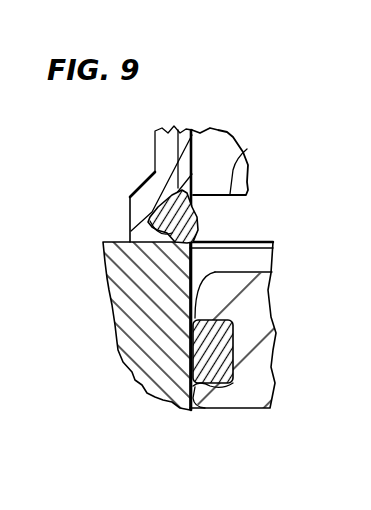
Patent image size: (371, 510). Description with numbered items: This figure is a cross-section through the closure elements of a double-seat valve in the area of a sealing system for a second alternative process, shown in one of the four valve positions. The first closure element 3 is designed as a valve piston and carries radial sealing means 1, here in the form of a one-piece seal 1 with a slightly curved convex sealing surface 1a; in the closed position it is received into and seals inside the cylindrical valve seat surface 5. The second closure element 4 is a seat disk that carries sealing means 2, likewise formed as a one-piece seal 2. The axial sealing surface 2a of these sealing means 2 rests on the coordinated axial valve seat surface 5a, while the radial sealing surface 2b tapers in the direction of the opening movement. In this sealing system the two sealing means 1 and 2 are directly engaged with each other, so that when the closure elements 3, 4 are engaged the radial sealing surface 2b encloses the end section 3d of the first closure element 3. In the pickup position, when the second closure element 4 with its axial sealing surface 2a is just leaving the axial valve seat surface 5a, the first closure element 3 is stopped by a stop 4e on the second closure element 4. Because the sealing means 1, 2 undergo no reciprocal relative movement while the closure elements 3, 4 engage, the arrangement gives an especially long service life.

The radial sealing means 1 is at (216, 358).
The sealing surface 1a is at (233, 380).
The sealing means 2 is at (181, 129).
The axial sealing surface 2a is at (189, 243).
The radial sealing surface 2b is at (198, 229).
The first closure element 3 is at (253, 331).
The end section 3d is at (198, 293).
The second closure element 4 is at (170, 144).
The stop 4e is at (210, 198).
The cylindrical valve seat surface 5 is at (195, 255).
The axial valve seat surface 5a is at (150, 214).